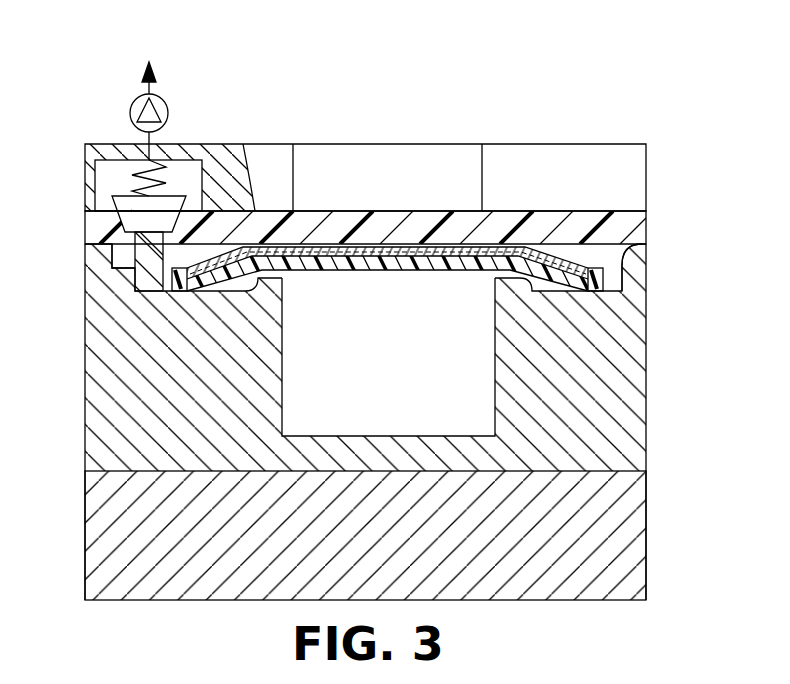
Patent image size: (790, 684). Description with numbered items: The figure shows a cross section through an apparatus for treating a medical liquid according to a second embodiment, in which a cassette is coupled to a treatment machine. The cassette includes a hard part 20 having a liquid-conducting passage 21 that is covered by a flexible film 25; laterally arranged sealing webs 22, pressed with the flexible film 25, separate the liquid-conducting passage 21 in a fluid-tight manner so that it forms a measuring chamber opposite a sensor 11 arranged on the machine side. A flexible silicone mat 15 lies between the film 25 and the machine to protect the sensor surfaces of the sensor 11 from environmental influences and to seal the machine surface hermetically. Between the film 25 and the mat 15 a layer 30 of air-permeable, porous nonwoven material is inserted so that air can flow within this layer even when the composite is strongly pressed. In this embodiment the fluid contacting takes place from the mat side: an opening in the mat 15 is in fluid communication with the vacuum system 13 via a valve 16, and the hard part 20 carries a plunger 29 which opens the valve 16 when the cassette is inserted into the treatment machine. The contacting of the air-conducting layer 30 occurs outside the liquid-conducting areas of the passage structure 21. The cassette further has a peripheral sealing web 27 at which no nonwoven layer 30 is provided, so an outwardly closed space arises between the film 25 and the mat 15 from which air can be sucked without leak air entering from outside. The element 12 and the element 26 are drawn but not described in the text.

The sensor 11 is at (400, 158).
The base plate 12 is at (633, 548).
The vacuum system 13 is at (160, 108).
The silicone mat 15 is at (625, 220).
The valve 16 is at (127, 205).
The hard part 20 is at (93, 392).
The liquid-conducting passage 21 is at (402, 400).
The sealing webs 22 is at (277, 278).
The flexible film 25 is at (370, 272).
The membrane anchor 26 is at (170, 276).
The peripheral sealing web 27 is at (627, 257).
The plunger 29 is at (133, 257).
The nonwoven layer 30 is at (413, 272).